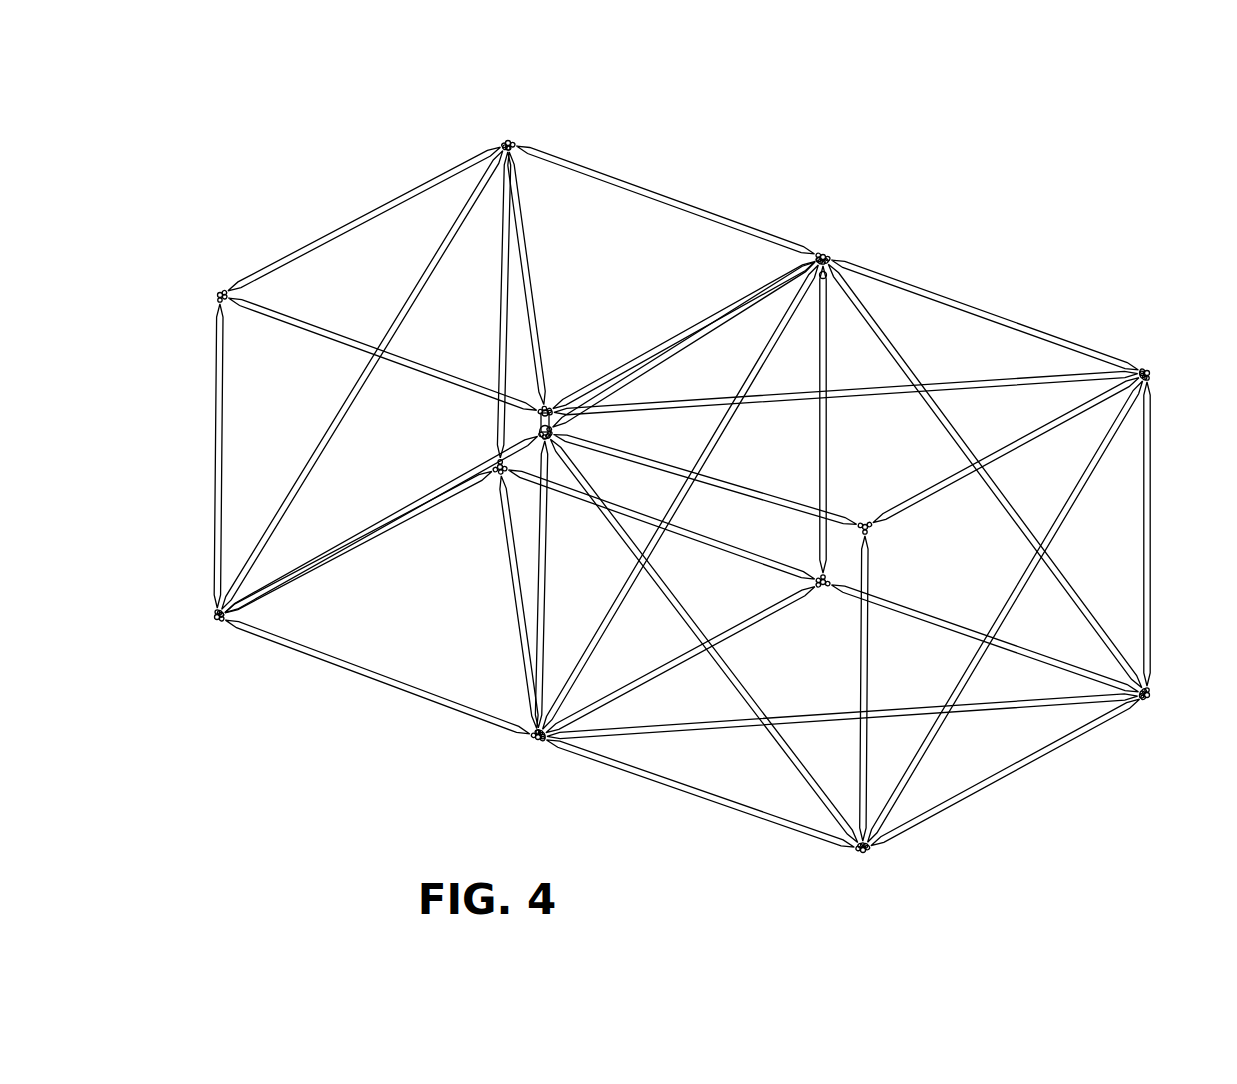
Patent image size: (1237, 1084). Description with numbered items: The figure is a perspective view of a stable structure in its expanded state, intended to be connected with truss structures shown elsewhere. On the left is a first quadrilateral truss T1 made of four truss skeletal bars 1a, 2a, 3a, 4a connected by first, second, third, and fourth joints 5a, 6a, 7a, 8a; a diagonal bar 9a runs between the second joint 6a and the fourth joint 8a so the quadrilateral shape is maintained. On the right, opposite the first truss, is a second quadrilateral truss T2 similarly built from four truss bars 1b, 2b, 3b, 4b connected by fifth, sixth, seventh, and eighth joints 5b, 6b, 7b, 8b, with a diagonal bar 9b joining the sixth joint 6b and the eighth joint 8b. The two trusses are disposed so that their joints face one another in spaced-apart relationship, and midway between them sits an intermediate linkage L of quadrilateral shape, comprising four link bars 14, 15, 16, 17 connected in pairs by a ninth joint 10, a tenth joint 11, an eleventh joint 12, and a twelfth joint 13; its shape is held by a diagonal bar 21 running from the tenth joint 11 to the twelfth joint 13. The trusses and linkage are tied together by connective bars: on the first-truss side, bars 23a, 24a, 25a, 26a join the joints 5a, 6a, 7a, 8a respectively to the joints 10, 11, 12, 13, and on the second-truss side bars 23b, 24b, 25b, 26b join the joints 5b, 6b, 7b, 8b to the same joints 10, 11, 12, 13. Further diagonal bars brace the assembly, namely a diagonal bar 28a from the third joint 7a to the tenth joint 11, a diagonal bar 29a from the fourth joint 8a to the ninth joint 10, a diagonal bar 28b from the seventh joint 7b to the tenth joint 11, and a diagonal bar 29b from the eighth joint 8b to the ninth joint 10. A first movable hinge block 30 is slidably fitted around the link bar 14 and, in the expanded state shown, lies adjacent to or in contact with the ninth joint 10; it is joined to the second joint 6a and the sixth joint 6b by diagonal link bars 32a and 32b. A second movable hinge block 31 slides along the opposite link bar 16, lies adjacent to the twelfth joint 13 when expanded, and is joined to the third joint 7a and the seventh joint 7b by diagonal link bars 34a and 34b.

The truss skeletal bar 1a is at (214, 470).
The truss bar 1b is at (868, 668).
The truss skeletal bar 2a is at (381, 532).
The truss bar 2b is at (1022, 766).
The truss skeletal bar 3a is at (502, 320).
The truss bar 3b is at (1155, 586).
The truss skeletal bar 4a is at (358, 218).
The truss bar 4b is at (950, 486).
The first joint 5a is at (216, 294).
The fifth joint 5b is at (865, 522).
The second joint 6a is at (216, 622).
The sixth joint 6b is at (865, 855).
The third joint 7a is at (498, 477).
The seventh joint 7b is at (1152, 698).
The fourth joint 8a is at (510, 141).
The eighth joint 8b is at (1150, 370).
The diagonal bar 9a is at (322, 442).
The diagonal bar 9b is at (1085, 500).
The ninth joint 10 is at (547, 405).
The tenth joint 11 is at (536, 742).
The eleventh joint 12 is at (822, 590).
The twelfth joint 13 is at (823, 254).
The link bar 14 is at (548, 580).
The link bar 15 is at (650, 678).
The link bar 16 is at (832, 364).
The link bar 17 is at (613, 372).
The diagonal bar 21 is at (688, 492).
The connective bar 23a is at (322, 330).
The connective bar 23b is at (766, 494).
The connective bar 24a is at (371, 676).
The connective bar 24b is at (684, 790).
The connective bar 25a is at (651, 518).
The connective bar 25b is at (930, 618).
The connective bar 26a is at (736, 224).
The connective bar 26b is at (988, 312).
The diagonal bar 28a is at (520, 625).
The diagonal bar 28b is at (742, 726).
The diagonal bar 29a is at (527, 265).
The diagonal bar 29b is at (949, 382).
The first movable hinge block 30 is at (539, 430).
The second movable hinge block 31 is at (822, 285).
The diagonal link bar 32a is at (397, 512).
The diagonal link bar 32b is at (735, 678).
The diagonal link bar 34a is at (667, 354).
The diagonal link bar 34b is at (955, 428).
The first quadrilateral truss T1 is at (288, 250).
The second quadrilateral truss T2 is at (1165, 487).
The intermediate linkage L is at (712, 312).